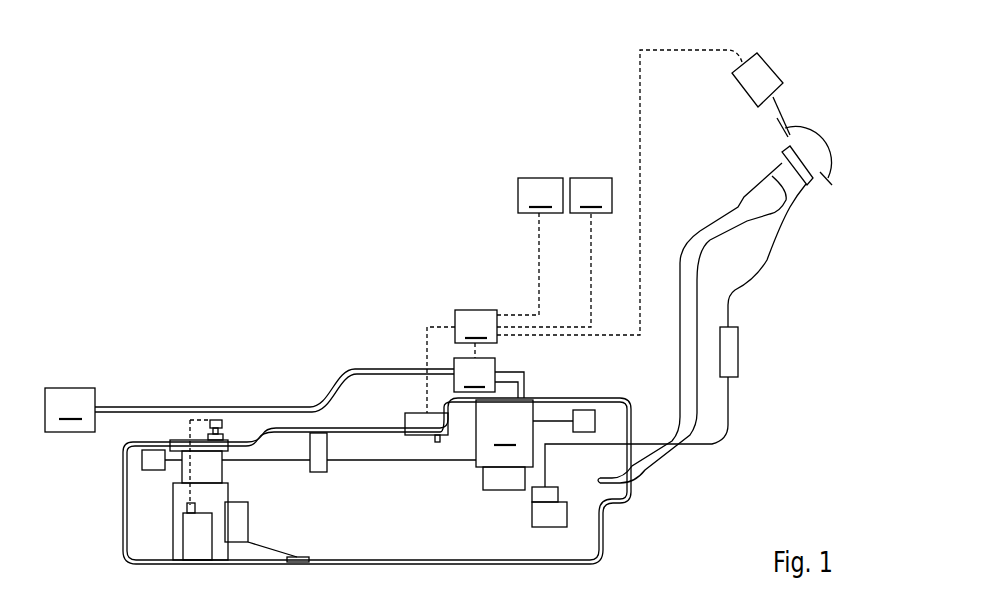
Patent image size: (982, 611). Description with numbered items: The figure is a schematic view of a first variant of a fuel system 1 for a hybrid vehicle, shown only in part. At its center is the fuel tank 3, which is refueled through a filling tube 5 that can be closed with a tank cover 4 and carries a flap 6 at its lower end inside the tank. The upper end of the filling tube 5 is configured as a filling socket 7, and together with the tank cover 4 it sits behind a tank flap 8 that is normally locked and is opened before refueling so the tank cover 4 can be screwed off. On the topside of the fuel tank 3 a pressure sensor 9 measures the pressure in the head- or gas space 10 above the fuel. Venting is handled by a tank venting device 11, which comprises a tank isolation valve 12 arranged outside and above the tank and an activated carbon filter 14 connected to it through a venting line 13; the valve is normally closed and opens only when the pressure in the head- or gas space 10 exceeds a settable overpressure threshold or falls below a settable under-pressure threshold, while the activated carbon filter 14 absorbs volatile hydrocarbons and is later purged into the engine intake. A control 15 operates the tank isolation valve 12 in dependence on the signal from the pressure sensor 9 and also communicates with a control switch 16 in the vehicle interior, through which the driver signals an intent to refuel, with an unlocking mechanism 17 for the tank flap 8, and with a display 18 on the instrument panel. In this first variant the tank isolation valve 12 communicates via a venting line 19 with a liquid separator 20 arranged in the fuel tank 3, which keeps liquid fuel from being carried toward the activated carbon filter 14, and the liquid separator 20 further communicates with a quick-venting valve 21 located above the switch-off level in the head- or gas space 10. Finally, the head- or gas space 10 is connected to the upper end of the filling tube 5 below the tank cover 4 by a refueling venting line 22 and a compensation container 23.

The fuel system 1 is at (336, 237).
The fuel tank 3 is at (123, 500).
The tank cover 4 is at (808, 186).
The filling tube 5 is at (680, 362).
The flap 6 is at (597, 468).
The filling socket 7 is at (762, 188).
The tank flap 8 is at (823, 135).
The pressure sensor 9 is at (422, 437).
The head- or gas space 10 is at (369, 450).
The tank venting device 11 is at (427, 297).
The tank isolation valve 12 is at (474, 375).
The venting line 13 is at (188, 408).
The activated carbon filter 14 is at (70, 410).
The control 15 is at (476, 326).
The control switch 16 is at (540, 195).
The display 18 is at (591, 195).
The unlocking mechanism 17 is at (762, 72).
The venting line 19 is at (526, 375).
The liquid separator 20 is at (535, 433).
The quick-venting valve 21 is at (506, 492).
The refueling venting line 22 is at (735, 395).
The compensation container 23 is at (740, 352).